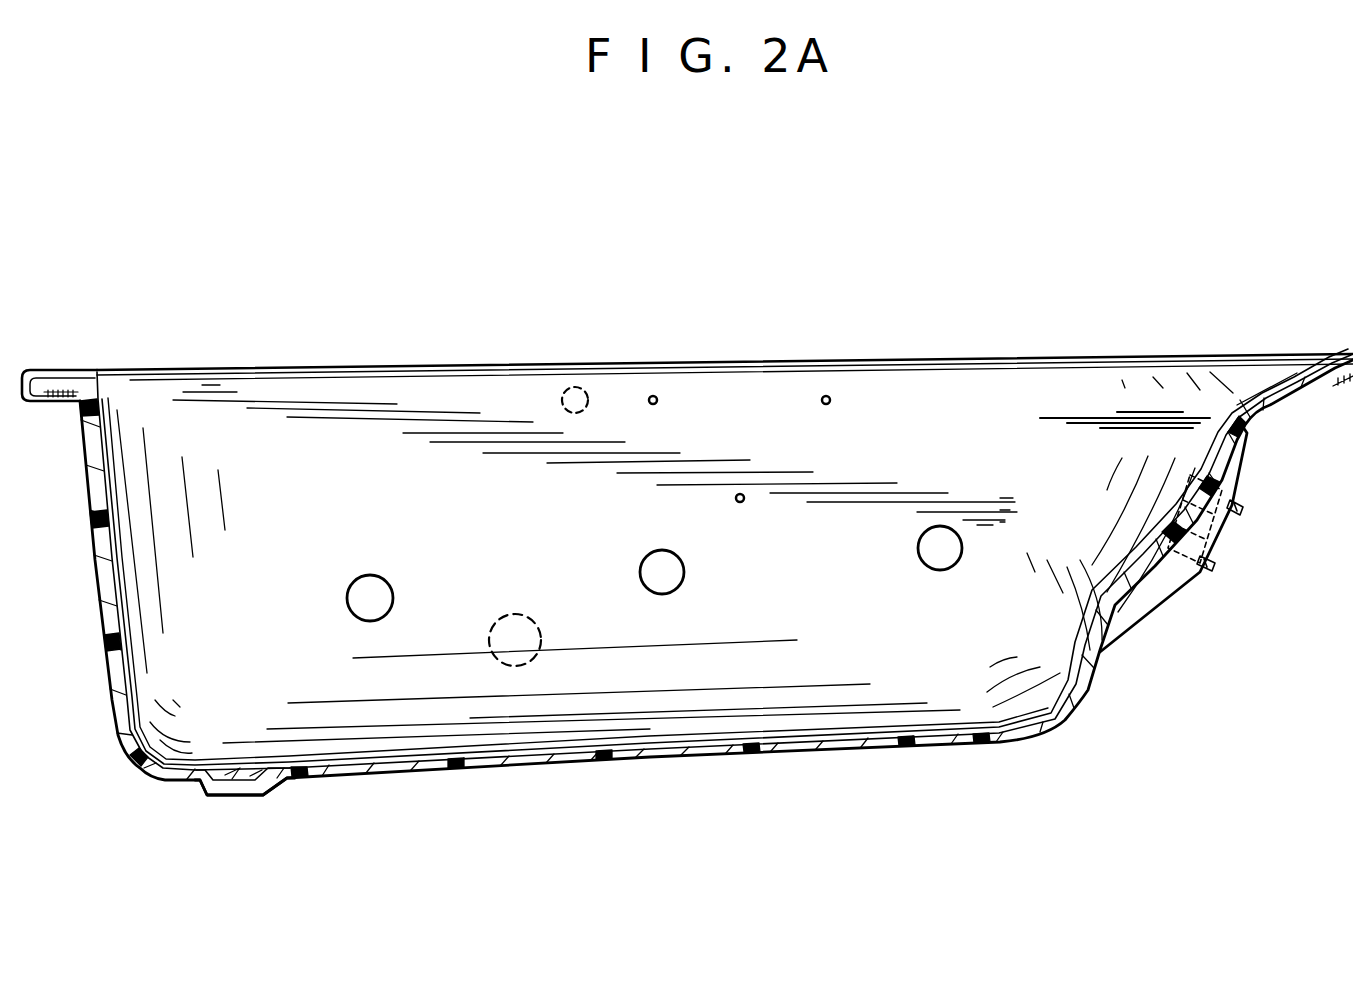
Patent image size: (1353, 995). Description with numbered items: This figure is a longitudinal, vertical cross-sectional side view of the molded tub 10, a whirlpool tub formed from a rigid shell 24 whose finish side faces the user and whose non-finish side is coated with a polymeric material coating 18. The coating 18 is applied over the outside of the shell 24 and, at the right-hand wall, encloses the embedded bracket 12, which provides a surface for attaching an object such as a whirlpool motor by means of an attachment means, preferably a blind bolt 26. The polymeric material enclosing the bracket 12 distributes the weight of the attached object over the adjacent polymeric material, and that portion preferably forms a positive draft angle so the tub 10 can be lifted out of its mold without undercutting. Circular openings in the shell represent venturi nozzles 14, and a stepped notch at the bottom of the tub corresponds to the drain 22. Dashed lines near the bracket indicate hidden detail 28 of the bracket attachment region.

The molded tub 10 is at (93, 523).
The embedded bracket 12 is at (1217, 523).
The venturi nozzles 14 is at (643, 558).
The polymeric material coating 18 is at (112, 718).
The drain 22 is at (242, 770).
The rigid shell 24 is at (113, 605).
The blind bolt 26 is at (1207, 567).
The fastener outline 28 is at (1213, 525).